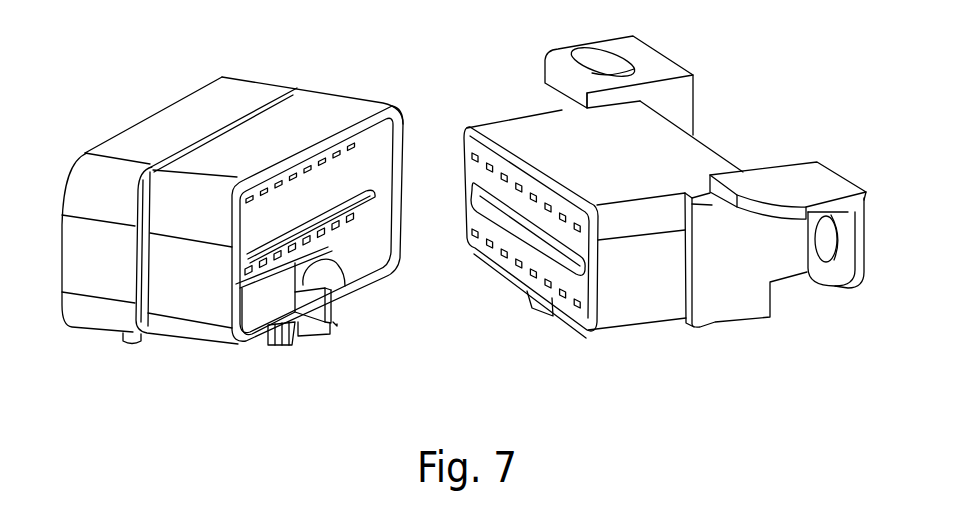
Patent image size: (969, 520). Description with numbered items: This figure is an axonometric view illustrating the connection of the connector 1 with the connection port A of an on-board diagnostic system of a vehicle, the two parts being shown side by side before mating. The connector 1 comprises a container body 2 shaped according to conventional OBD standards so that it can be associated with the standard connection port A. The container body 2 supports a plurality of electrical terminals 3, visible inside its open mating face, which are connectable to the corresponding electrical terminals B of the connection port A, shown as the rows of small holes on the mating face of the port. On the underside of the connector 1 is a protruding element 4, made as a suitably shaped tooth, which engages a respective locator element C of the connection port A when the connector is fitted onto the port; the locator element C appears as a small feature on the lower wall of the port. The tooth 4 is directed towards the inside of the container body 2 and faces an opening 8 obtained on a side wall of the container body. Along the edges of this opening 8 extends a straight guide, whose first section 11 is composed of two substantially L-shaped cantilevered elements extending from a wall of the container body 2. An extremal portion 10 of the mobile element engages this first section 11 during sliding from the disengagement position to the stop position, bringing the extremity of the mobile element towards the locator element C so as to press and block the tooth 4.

The connector 1 is at (138, 60).
The container body 2 is at (310, 108).
The electrical terminals 3 is at (290, 200).
The protruding element 4 is at (335, 300).
The opening 8 is at (320, 277).
The extremal portion 10 is at (318, 337).
The first section 11 is at (298, 347).
The connection port A is at (784, 84).
The electrical terminals B is at (504, 173).
The locator element C is at (538, 316).